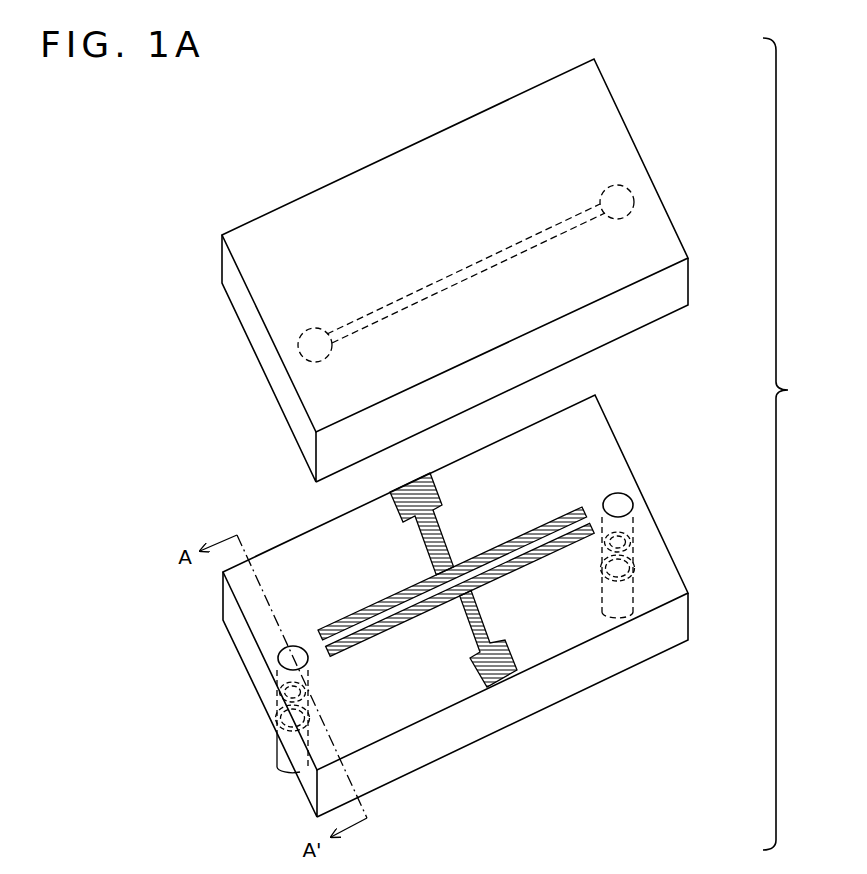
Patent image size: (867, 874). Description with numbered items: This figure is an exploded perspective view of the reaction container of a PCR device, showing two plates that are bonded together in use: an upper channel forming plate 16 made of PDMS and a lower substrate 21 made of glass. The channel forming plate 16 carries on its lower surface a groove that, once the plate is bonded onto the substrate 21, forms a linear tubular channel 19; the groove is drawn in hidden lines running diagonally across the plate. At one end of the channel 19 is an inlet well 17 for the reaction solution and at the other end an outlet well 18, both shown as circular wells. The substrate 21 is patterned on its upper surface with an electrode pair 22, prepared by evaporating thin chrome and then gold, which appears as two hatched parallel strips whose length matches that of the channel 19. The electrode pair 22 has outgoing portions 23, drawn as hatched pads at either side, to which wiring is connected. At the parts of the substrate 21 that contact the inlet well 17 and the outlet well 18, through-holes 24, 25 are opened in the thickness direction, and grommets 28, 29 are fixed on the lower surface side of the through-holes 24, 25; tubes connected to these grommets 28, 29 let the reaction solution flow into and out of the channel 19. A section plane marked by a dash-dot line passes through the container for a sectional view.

The channel forming plate 16 is at (622, 118).
The inlet well 17 is at (300, 340).
The outlet well 18 is at (636, 187).
The channel 19 is at (538, 243).
The substrate 21 is at (625, 455).
The electrode pair 22 is at (518, 572).
The outgoing portions 23 is at (395, 505).
The through-hole 24 is at (290, 658).
The through-hole 25 is at (622, 505).
The grommet 28 is at (278, 752).
The grommet 29 is at (625, 590).